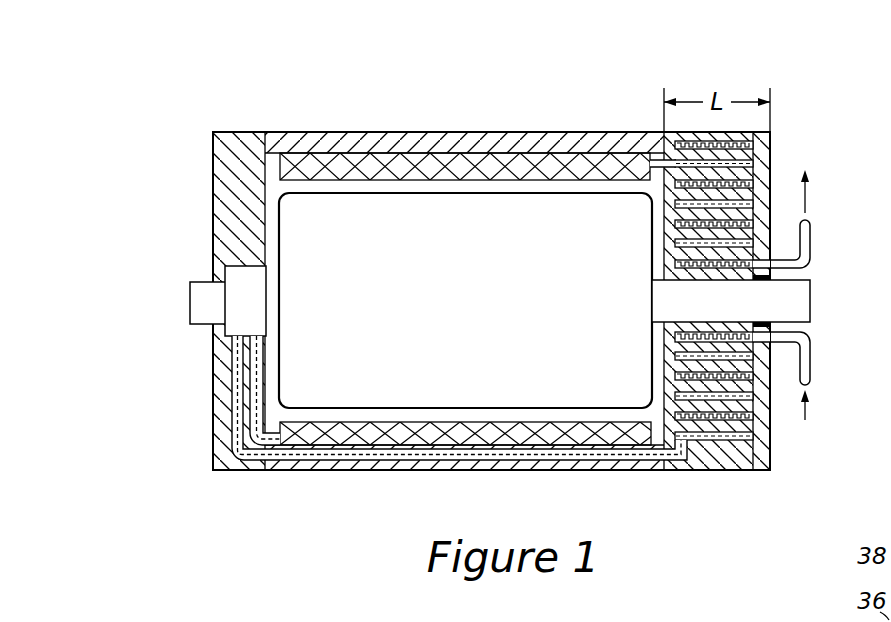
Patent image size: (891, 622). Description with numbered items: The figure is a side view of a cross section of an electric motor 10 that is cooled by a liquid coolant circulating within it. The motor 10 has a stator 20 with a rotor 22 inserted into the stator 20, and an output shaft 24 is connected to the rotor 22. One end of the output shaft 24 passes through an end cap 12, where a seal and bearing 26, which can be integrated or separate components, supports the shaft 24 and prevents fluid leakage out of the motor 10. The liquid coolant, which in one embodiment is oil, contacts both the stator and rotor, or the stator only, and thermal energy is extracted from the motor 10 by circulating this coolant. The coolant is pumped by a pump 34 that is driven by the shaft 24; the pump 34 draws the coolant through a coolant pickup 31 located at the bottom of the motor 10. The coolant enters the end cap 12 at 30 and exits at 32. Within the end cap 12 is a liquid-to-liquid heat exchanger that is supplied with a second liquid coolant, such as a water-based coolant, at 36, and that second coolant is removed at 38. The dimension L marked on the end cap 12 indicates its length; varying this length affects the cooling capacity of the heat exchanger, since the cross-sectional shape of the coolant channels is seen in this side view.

The motor 10 is at (527, 106).
The end cap 12 is at (723, 470).
The stator 20 is at (390, 163).
The rotor 22 is at (451, 312).
The output shaft 24 is at (807, 314).
The seal and bearing 26 is at (765, 285).
The coolant entry 30 is at (598, 458).
The coolant pickup 31 is at (262, 440).
The coolant exit 32 is at (668, 165).
The pump 34 is at (248, 305).
The second coolant supply 36 is at (807, 362).
The second coolant removal 38 is at (813, 240).